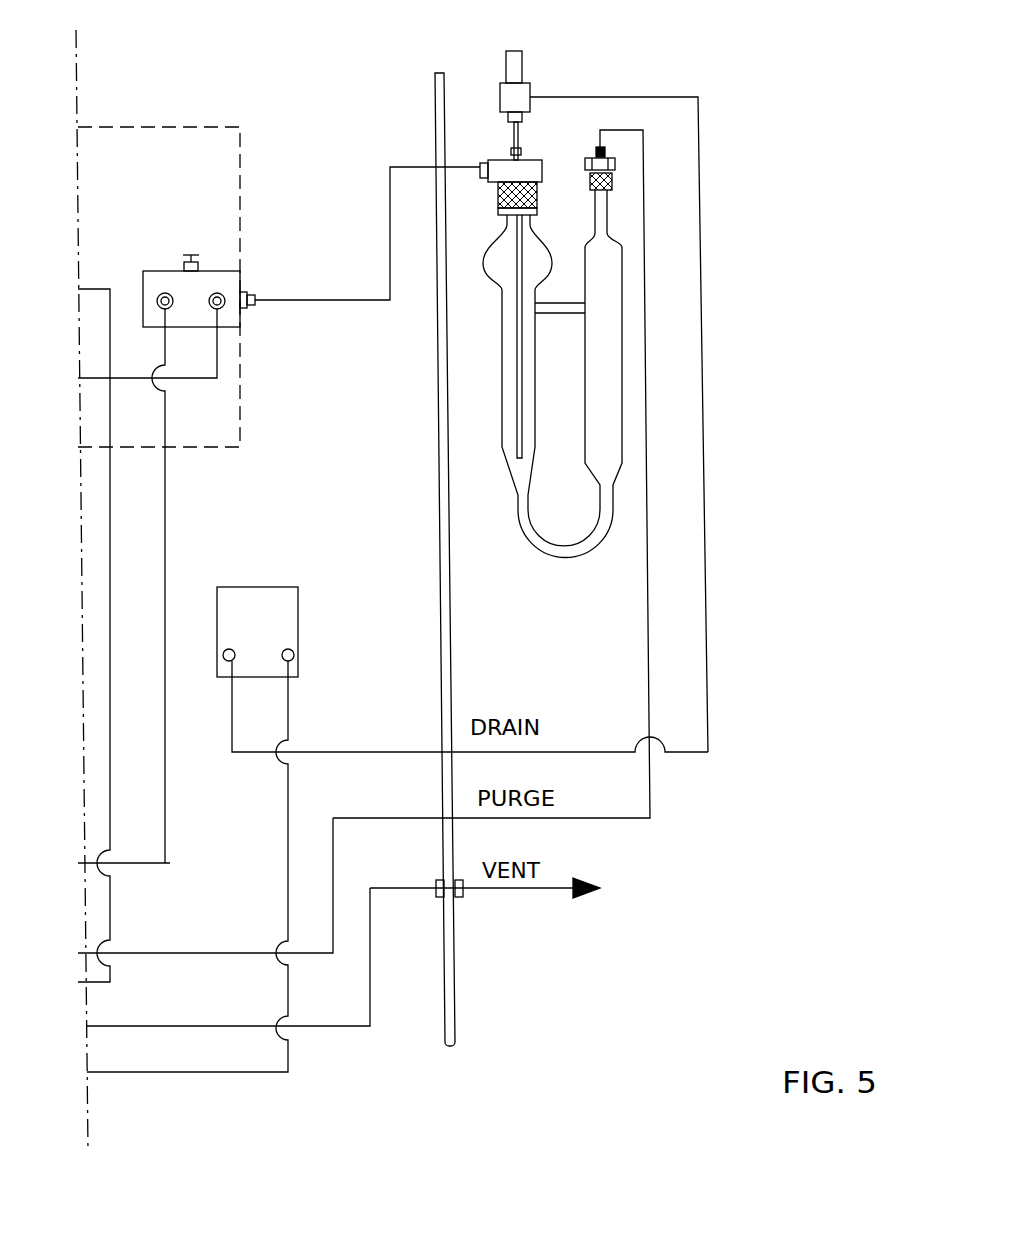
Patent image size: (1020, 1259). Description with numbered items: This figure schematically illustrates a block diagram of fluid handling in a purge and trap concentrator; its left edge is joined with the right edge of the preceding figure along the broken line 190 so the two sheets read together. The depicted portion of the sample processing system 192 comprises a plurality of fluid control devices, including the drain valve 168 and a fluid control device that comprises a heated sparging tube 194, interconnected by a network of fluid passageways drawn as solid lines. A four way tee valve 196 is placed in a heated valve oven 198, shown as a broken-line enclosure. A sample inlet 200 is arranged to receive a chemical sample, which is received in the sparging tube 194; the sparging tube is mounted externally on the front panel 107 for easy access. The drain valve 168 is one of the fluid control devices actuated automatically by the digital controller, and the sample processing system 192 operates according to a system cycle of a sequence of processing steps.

The broken line 190 is at (78, 62).
The heated valve oven 198 is at (163, 127).
The four way tee valve 196 is at (222, 270).
The drain valve 168 is at (243, 587).
The sample inlet 200 is at (512, 51).
The heated sparging tube 194 is at (560, 557).
The sample processing system 192 is at (752, 90).
The front panel 107 is at (455, 973).